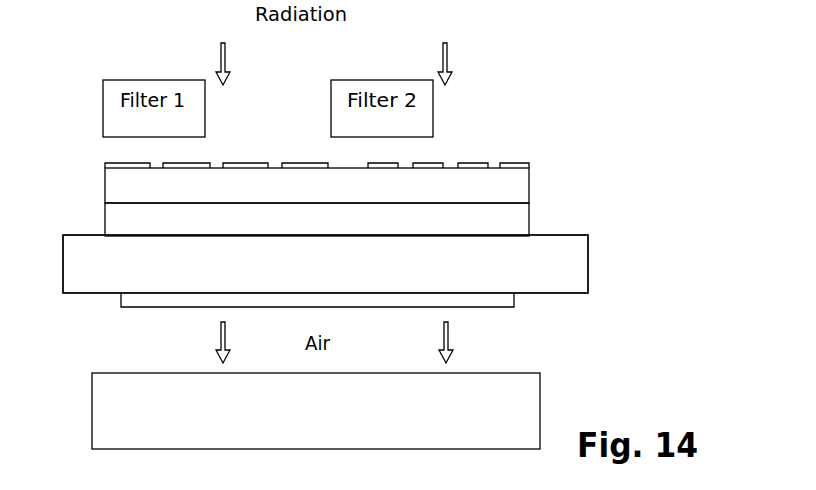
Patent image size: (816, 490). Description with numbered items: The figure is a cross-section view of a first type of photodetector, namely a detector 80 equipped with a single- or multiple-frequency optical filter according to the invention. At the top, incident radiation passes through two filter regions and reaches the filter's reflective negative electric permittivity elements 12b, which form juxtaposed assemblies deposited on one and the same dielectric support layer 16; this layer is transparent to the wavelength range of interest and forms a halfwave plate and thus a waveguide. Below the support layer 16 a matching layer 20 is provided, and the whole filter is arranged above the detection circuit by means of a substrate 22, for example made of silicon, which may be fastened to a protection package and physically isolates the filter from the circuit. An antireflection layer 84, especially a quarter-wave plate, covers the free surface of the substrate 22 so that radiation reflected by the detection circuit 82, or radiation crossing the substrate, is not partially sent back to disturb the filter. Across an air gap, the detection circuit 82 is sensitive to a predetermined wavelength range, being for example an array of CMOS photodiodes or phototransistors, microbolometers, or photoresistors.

The detector 80 is at (70, 118).
The reflective elements 12b is at (256, 163).
The dielectric support layer 16 is at (529, 187).
The matching layer 20 is at (529, 218).
The substrate 22 is at (588, 262).
The antireflection layer 84 is at (514, 297).
The detection circuit 82 is at (540, 410).